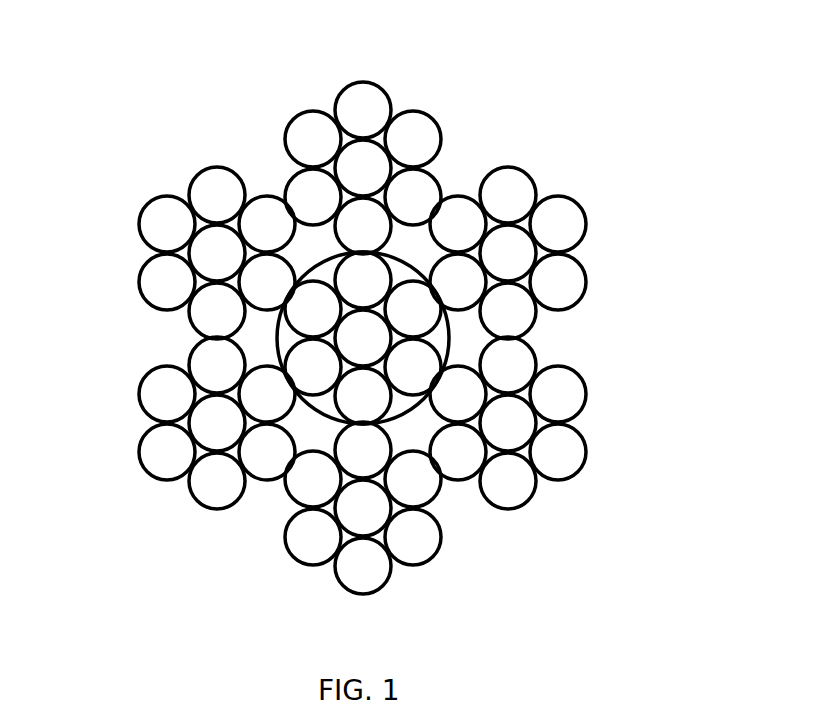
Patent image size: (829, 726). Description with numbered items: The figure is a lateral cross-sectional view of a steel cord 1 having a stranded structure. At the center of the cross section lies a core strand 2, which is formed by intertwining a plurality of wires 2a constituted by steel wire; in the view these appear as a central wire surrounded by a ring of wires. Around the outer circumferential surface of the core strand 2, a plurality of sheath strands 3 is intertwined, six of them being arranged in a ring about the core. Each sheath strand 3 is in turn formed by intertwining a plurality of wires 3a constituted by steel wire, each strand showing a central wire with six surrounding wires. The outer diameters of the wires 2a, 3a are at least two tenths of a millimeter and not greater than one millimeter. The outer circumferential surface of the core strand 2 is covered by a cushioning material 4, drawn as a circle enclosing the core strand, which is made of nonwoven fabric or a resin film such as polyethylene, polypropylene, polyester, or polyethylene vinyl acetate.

The steel cord 1 is at (346, 324).
The core strand 2 is at (355, 334).
The wires 2a is at (312, 373).
The sheath strands 3 is at (346, 340).
The wires 3a is at (307, 118).
The cushioning material 4 is at (313, 263).